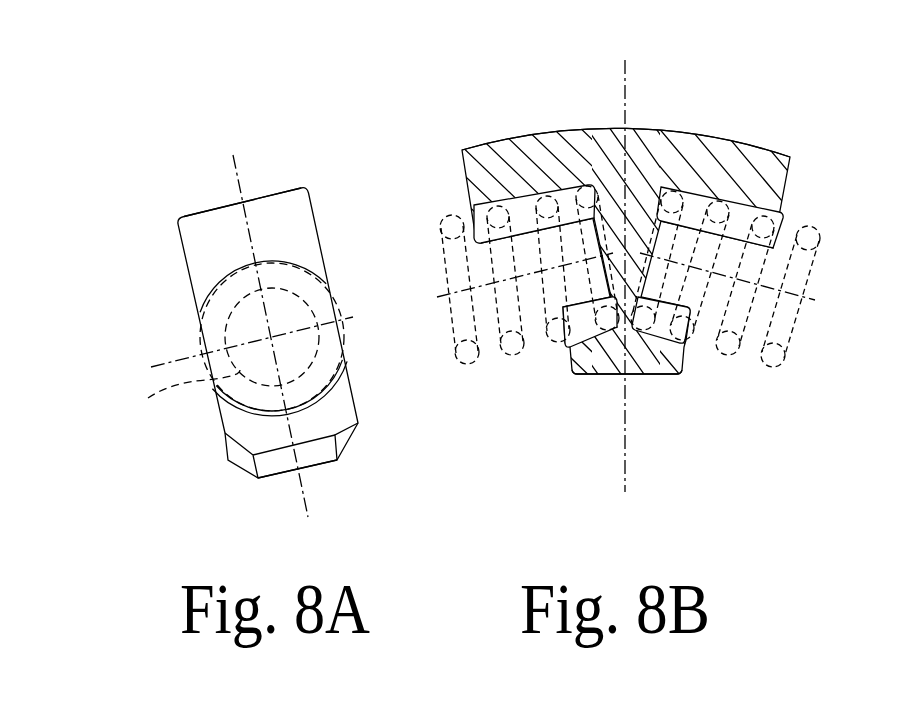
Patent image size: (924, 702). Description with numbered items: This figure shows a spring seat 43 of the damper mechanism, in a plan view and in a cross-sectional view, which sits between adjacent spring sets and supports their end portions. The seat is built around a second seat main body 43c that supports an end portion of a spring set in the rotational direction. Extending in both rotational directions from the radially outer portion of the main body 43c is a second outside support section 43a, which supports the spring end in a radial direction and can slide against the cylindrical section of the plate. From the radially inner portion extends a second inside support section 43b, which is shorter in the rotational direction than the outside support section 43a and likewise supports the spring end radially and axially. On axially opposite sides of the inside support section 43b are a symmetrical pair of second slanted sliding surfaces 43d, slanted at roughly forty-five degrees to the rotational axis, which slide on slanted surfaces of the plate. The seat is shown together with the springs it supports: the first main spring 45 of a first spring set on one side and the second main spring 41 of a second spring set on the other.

In FIG. 8A, the second main spring 41 is at (179, 394).
In FIG. 8B, the second main spring 41 is at (820, 238).
In FIG. 8A, the first spring seat 43 is at (170, 215).
In FIG. 8B, the first spring seat 43 is at (614, 261).
In FIG. 8A, the second outside support section 43a is at (293, 205).
In FIG. 8B, the second outside support section 43a is at (597, 150).
In FIG. 8A, the second inside support section 43b is at (305, 428).
In FIG. 8B, the second inside support section 43b is at (587, 365).
In FIG. 8A, the second seat main body 43c is at (242, 333).
In FIG. 8B, the second seat main body 43c is at (640, 230).
In FIG. 8A, the second slanted sliding surface 43d is at (235, 457).
In FIG. 8B, the first main spring 45 is at (452, 216).